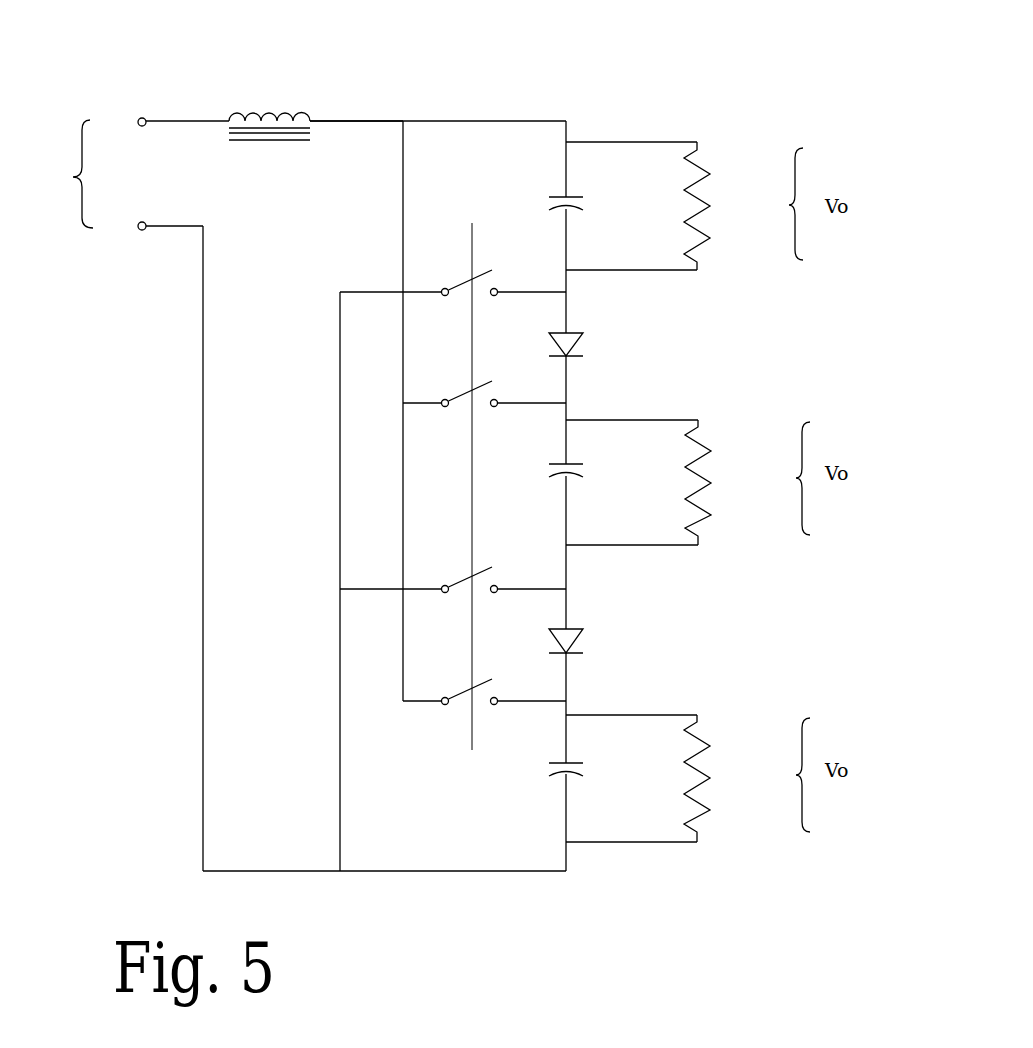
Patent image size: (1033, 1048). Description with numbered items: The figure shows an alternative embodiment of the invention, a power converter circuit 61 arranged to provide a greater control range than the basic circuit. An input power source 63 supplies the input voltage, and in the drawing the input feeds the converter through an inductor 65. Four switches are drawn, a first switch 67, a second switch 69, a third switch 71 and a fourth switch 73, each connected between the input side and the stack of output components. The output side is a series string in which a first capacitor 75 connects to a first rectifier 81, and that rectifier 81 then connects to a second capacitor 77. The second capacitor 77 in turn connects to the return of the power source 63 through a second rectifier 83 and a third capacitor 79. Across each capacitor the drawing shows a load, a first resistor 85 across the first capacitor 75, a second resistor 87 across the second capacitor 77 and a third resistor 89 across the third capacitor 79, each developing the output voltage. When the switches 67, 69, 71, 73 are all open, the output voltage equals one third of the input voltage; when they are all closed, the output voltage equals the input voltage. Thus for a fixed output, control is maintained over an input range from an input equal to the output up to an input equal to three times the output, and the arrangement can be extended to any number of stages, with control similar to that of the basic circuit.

The power converter circuit 61 is at (225, 38).
The power source 63 is at (117, 213).
The inductor L1 65 is at (345, 60).
The switch S1 67 is at (403, 268).
The switch S2 69 is at (420, 418).
The switch S3 71 is at (452, 607).
The switch S4 73 is at (438, 718).
The first capacitor 75 is at (595, 173).
The second capacitor 77 is at (583, 440).
The third capacitor 79 is at (587, 748).
The rectifier 81 is at (577, 315).
The rectifier 83 is at (582, 617).
The load resistor R1 85 is at (710, 183).
The load resistor R2 87 is at (715, 448).
The load resistor R3 89 is at (718, 748).